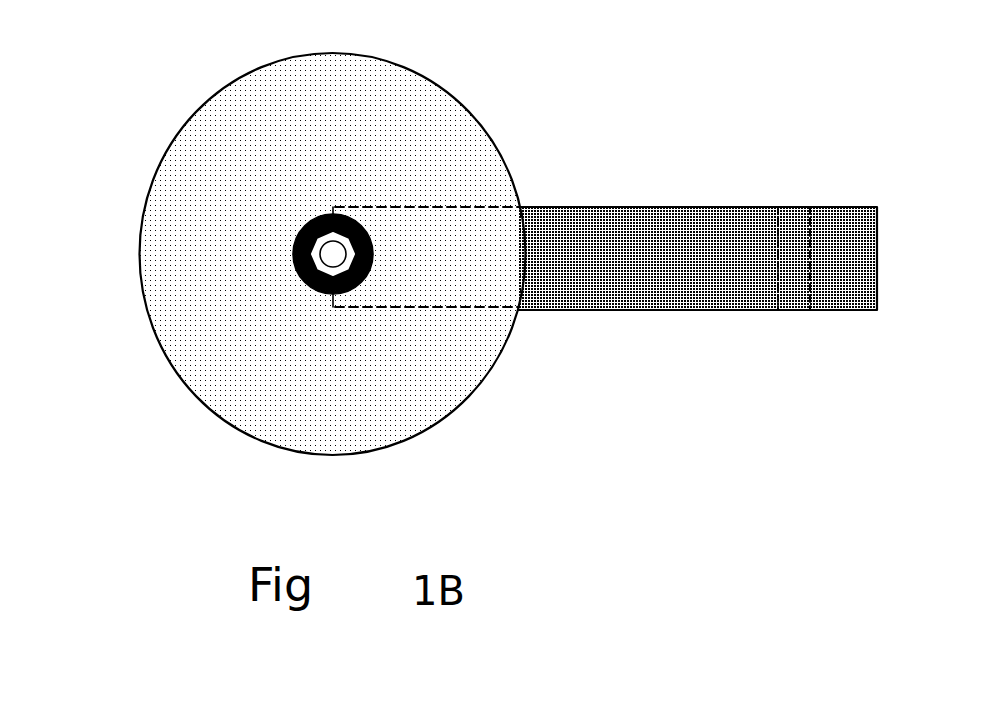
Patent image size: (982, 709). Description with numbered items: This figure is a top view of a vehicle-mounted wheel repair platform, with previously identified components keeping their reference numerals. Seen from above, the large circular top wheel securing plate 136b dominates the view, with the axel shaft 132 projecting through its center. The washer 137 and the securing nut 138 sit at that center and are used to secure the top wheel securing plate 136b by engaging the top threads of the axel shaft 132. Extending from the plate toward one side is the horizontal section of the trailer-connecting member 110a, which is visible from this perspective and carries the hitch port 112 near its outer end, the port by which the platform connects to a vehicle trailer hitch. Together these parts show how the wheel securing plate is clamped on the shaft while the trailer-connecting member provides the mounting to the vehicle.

The top wheel securing plate 136b is at (372, 429).
The horizontal section of the trailer-connecting member 110a is at (637, 310).
The hitch port 112 is at (795, 205).
The washer 137 is at (293, 260).
The securing nut 138 is at (312, 270).
The axel shaft 132 is at (337, 253).